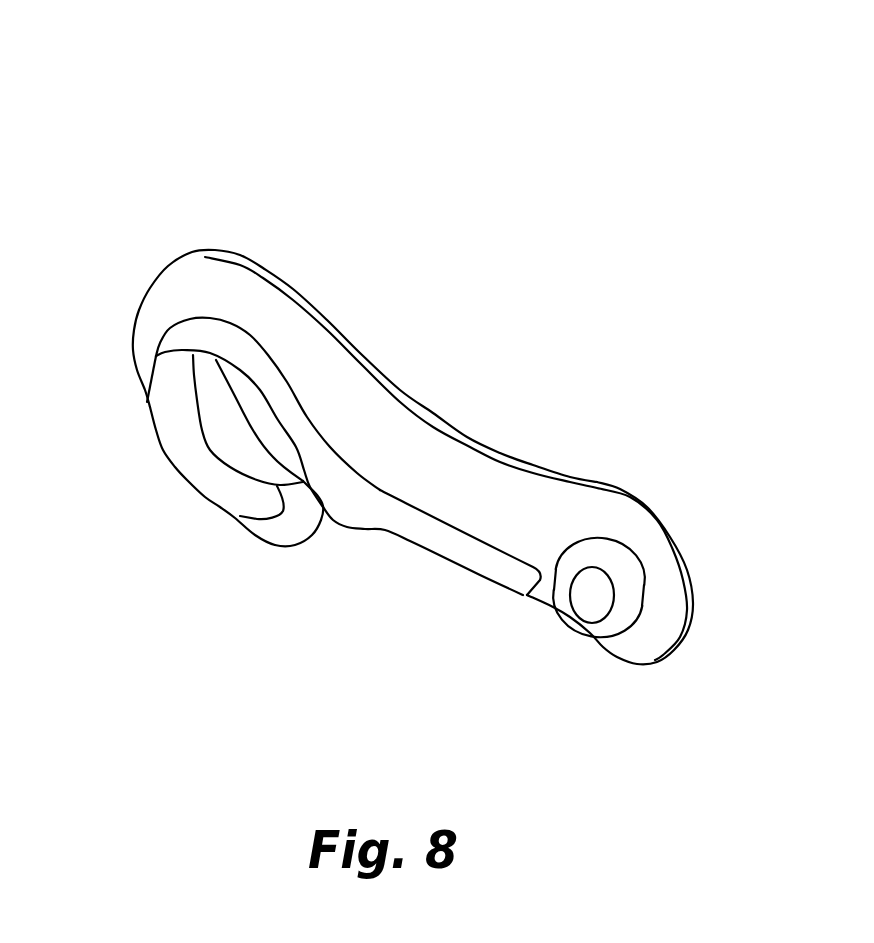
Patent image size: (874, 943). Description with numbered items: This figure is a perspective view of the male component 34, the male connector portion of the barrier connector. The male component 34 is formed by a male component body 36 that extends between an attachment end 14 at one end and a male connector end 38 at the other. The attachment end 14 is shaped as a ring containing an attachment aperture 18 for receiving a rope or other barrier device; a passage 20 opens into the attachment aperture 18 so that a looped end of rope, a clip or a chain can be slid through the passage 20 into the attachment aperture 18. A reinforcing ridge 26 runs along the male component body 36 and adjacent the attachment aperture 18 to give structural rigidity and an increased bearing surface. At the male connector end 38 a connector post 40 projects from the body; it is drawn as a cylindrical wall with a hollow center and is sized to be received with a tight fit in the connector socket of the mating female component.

The attachment end 14 is at (205, 200).
The attachment aperture 18 is at (220, 426).
The passage 20 is at (334, 544).
The reinforcing ridge 26 is at (233, 337).
The male component 34 is at (500, 295).
The male component body 36 is at (471, 438).
The male connector end 38 is at (675, 453).
The connector post 40 is at (625, 562).